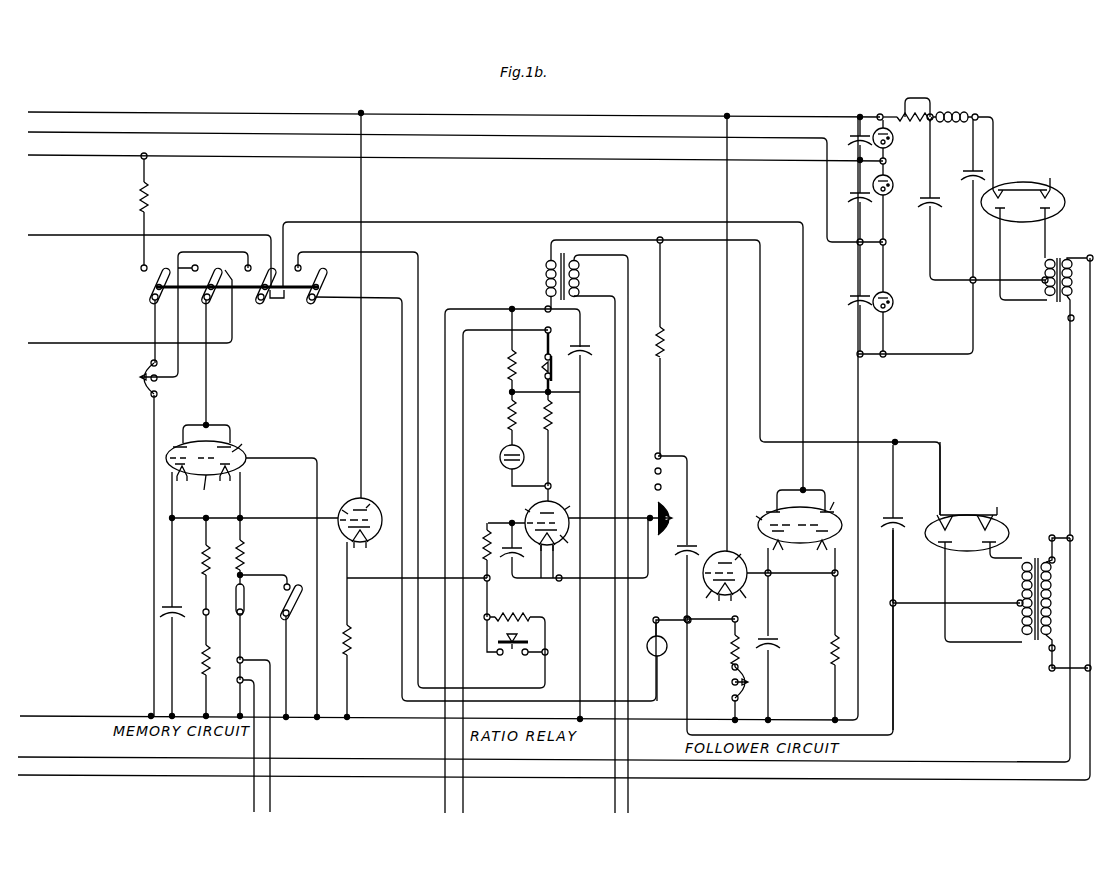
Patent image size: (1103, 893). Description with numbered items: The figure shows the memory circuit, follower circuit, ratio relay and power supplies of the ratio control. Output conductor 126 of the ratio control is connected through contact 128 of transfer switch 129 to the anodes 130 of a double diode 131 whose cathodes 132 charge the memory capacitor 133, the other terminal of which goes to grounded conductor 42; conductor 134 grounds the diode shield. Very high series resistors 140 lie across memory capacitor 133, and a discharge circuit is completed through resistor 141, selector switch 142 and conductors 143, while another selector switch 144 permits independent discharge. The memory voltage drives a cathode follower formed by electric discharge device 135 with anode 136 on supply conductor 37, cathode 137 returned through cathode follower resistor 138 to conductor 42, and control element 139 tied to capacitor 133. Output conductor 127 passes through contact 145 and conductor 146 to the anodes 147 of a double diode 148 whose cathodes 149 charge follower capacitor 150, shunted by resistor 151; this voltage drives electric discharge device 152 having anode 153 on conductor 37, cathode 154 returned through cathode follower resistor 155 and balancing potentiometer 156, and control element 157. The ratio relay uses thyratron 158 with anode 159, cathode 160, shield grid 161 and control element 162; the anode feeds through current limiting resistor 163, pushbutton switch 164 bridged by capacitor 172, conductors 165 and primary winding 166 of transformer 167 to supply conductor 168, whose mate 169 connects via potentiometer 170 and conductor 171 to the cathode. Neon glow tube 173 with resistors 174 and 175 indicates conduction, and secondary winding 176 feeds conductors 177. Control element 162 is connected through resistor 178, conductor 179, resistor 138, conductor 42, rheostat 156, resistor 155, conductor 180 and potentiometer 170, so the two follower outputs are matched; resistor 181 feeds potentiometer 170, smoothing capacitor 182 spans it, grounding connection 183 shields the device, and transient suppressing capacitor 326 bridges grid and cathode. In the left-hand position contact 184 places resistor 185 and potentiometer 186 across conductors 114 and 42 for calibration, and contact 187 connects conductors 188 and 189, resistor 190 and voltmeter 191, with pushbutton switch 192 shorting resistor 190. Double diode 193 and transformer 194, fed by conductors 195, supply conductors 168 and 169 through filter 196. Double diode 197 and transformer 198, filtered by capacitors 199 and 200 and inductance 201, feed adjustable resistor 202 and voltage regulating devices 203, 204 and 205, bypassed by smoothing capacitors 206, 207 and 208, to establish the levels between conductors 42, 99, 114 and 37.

The direct current supply conductor 37 is at (96, 112).
The direct current conductor 99 is at (118, 134).
The direct current conductor 114 is at (80, 158).
The output conductor 127 is at (80, 235).
The output conductor 126 is at (80, 343).
The conductor 146 is at (636, 222).
The conductor 42 is at (68, 716).
The conductors 195 is at (68, 759).
The resistor 185 is at (150, 195).
The transfer switch 129 is at (240, 290).
The contact 184 is at (152, 288).
The contact 128 is at (213, 300).
The contact 145 is at (268, 270).
The contact 187 is at (323, 277).
The conductor 188 is at (402, 340).
The conductor 189 is at (418, 290).
The potentiometer 186 is at (136, 378).
The anodes 130 is at (222, 438).
The cathodes 132 is at (244, 446).
The double diode 131 is at (201, 492).
The conductor 134 is at (317, 458).
The resistors 140 is at (200, 560).
The resistor 141 is at (246, 545).
The selector switch 142 is at (244, 598).
The conductors 143 is at (256, 800).
The selector switch 144 is at (296, 600).
The memory capacitor 133 is at (183, 620).
The electric discharge device 135 is at (352, 498).
The anode 136 is at (370, 500).
The control element 139 is at (340, 508).
The cathode 137 is at (345, 545).
The cathode follower resistor 138 is at (351, 640).
The conductor 179 is at (376, 580).
The transformer 167 is at (563, 252).
The primary winding 166 is at (546, 276).
The secondary winding 176 is at (580, 278).
The conductors 165 is at (445, 800).
The conductors 177 is at (612, 798).
The capacitor 172 is at (588, 358).
The resistor 175 is at (508, 366).
The pushbutton switch 164 is at (553, 378).
The resistor 174 is at (508, 414).
The current limiting resistor 163 is at (554, 414).
The neon glow tube 173 is at (500, 457).
The electric discharge device 158 is at (560, 503).
The anode 159 is at (525, 509).
The shield grid 161 is at (570, 506).
The cathode 160 is at (568, 543).
The control element 162 is at (512, 565).
The conductor 171 is at (595, 580).
The current limiting resistor 178 is at (472, 553).
The transient suppressing capacitor 326 is at (500, 580).
The resistor 190 is at (524, 610).
The pushbutton switch 192 is at (512, 657).
The grounding connection 183 is at (578, 669).
The resistor 181 is at (664, 336).
The potentiometer 170 is at (672, 500).
The smoothing capacitor 182 is at (678, 558).
The voltmeter 191 is at (648, 652).
The conductor 168 is at (762, 365).
The electric discharge device 152 is at (712, 556).
The anode 153 is at (741, 554).
The control element 157 is at (698, 602).
The cathode 154 is at (751, 602).
The anodes 147 is at (775, 510).
The double diode 148 is at (840, 492).
The cathodes 149 is at (756, 516).
The cathode follower resistor 155 is at (731, 650).
The conductor 180 is at (703, 625).
The balancing potentiometer 156 is at (748, 700).
The follower capacitor 150 is at (780, 640).
The resistor 151 is at (831, 655).
The filter 196 is at (888, 530).
The conductor 169 is at (893, 680).
The double diode 193 is at (968, 514).
The transformer 194 is at (1030, 560).
The smoothing capacitor 206 is at (848, 140).
The smoothing capacitor 207 is at (852, 205).
The smoothing capacitor 208 is at (848, 300).
The voltage regulating device 203 is at (892, 145).
The voltage regulating device 204 is at (888, 196).
The voltage regulating device 205 is at (892, 306).
The adjustable resistor 202 is at (912, 128).
The inductance 201 is at (952, 126).
The capacitor 199 is at (940, 210).
The capacitor 200 is at (962, 176).
The double diode 197 is at (1030, 190).
The transformer 198 is at (1070, 256).